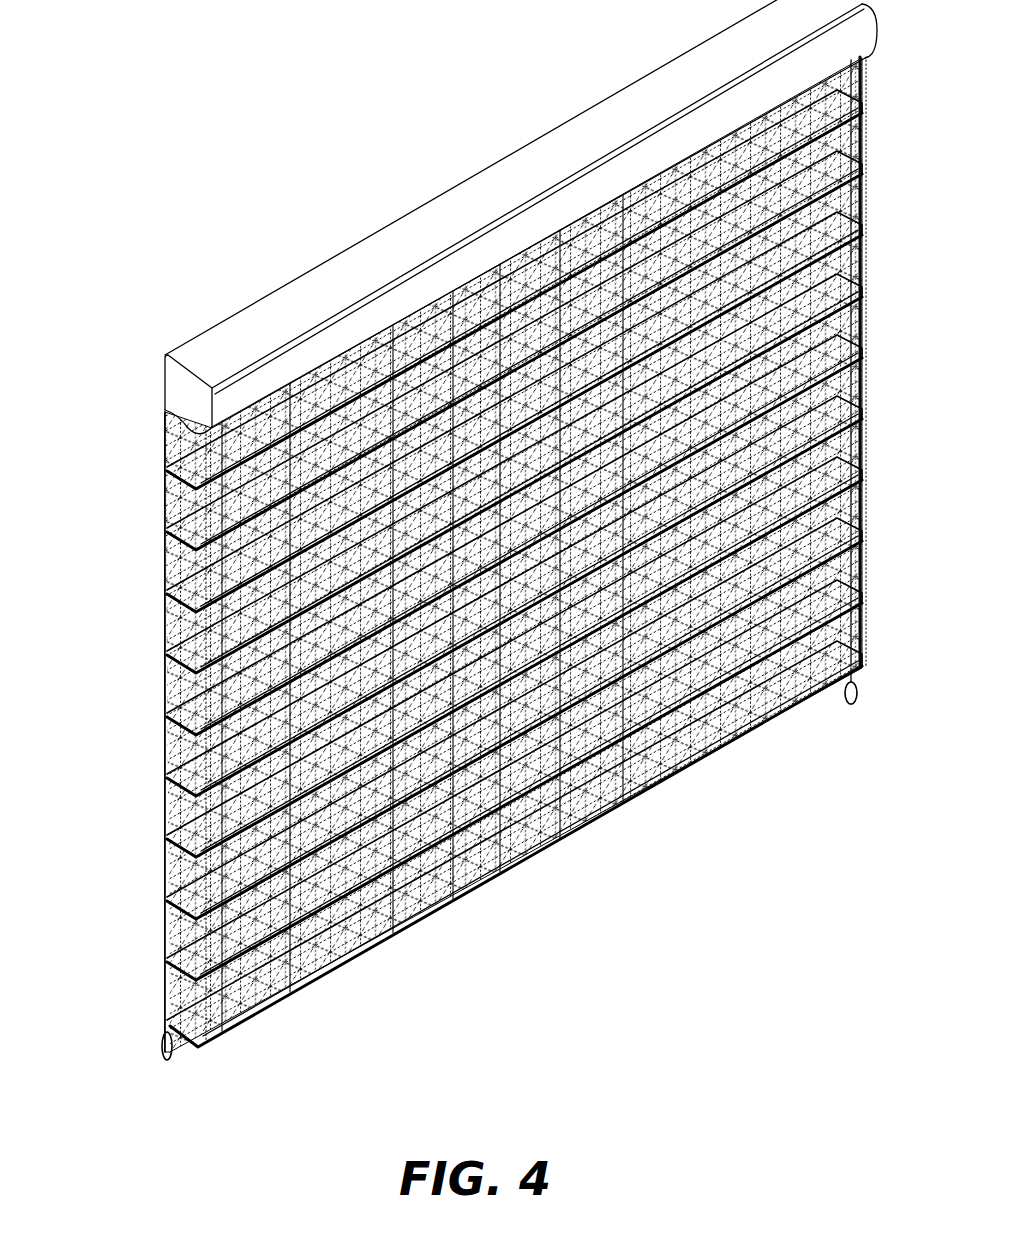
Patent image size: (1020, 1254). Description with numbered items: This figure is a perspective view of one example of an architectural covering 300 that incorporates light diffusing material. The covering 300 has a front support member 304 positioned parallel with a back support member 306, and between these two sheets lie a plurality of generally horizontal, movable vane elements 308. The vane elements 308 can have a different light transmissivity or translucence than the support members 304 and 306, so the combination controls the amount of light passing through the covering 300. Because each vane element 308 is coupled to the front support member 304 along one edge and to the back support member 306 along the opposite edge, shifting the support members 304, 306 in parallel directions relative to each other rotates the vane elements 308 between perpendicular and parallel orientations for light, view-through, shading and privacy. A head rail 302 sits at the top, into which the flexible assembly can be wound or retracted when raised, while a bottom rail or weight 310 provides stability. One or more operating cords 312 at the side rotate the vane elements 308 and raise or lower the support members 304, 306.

The covering 300 is at (410, 103).
The head rail 302 is at (237, 330).
The front support member 304 is at (207, 833).
The back support member 306 is at (173, 442).
The vane elements 308 is at (192, 532).
The bottom rail or weight 310 is at (163, 1050).
The operating cord 312 is at (862, 97).